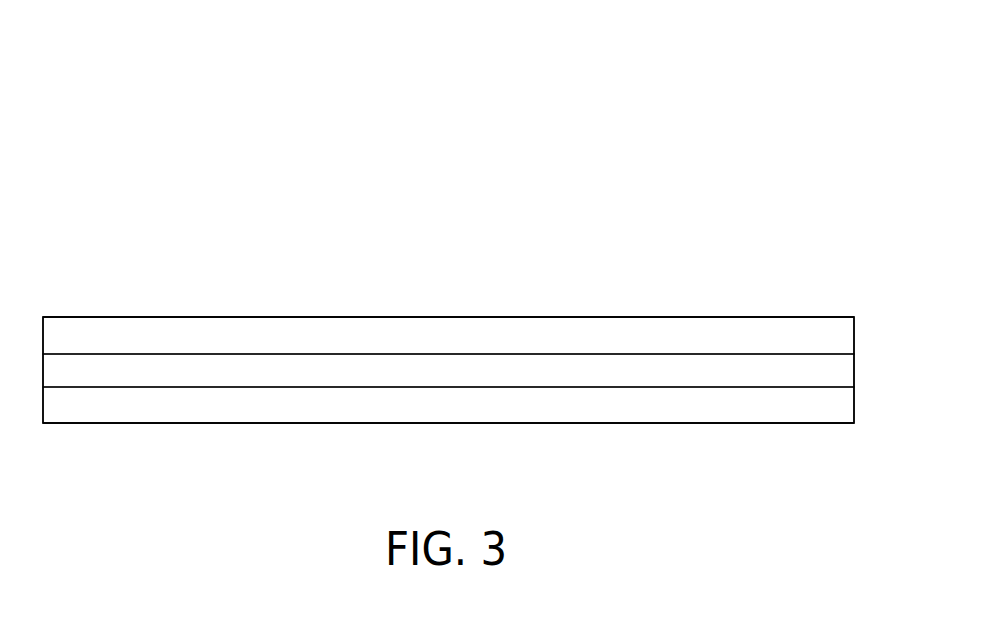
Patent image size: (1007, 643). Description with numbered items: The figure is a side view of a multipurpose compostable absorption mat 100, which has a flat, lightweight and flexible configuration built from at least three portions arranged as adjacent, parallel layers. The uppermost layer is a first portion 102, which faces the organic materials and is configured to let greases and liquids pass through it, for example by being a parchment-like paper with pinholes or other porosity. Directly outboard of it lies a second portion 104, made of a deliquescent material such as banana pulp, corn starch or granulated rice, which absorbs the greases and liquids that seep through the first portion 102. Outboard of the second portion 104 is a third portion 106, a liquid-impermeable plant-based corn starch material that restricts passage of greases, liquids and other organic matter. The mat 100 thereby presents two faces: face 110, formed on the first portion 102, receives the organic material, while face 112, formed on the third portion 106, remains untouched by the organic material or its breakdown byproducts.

The multipurpose compostable absorption mat 100 is at (642, 138).
The first portion 102 is at (455, 333).
The second portion 104 is at (523, 367).
The third portion 106 is at (616, 402).
The face 110 is at (231, 310).
The face 112 is at (218, 423).